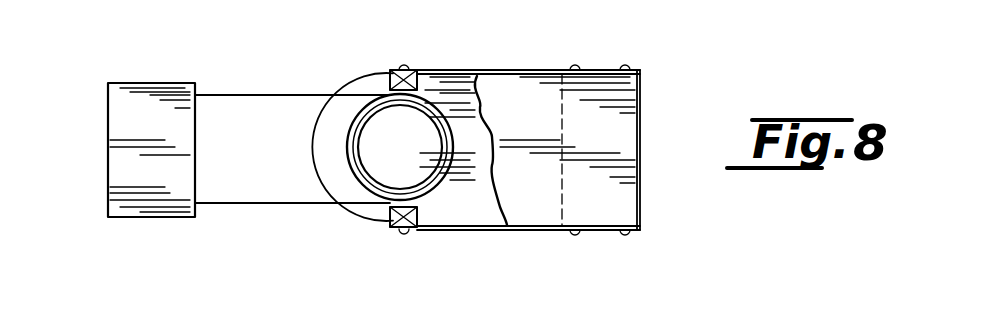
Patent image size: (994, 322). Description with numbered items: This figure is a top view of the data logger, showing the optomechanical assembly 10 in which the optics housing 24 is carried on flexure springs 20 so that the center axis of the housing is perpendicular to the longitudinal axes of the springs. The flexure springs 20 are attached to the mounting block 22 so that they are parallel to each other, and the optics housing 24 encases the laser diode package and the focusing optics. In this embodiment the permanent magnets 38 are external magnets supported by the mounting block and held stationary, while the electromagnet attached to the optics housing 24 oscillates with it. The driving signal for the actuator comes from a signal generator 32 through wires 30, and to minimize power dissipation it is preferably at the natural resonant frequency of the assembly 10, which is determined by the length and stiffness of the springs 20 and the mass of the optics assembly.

The optomechanical assembly 10 is at (316, 236).
The flexure springs 20 is at (510, 82).
The mounting block 22 is at (640, 207).
The optics housing 24 is at (362, 108).
The wires 30 is at (290, 97).
The signal generator 32 is at (148, 95).
The permanent magnets 38 is at (396, 68).